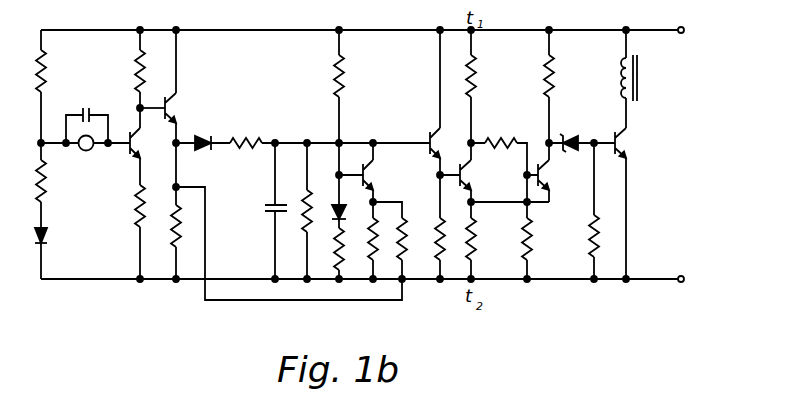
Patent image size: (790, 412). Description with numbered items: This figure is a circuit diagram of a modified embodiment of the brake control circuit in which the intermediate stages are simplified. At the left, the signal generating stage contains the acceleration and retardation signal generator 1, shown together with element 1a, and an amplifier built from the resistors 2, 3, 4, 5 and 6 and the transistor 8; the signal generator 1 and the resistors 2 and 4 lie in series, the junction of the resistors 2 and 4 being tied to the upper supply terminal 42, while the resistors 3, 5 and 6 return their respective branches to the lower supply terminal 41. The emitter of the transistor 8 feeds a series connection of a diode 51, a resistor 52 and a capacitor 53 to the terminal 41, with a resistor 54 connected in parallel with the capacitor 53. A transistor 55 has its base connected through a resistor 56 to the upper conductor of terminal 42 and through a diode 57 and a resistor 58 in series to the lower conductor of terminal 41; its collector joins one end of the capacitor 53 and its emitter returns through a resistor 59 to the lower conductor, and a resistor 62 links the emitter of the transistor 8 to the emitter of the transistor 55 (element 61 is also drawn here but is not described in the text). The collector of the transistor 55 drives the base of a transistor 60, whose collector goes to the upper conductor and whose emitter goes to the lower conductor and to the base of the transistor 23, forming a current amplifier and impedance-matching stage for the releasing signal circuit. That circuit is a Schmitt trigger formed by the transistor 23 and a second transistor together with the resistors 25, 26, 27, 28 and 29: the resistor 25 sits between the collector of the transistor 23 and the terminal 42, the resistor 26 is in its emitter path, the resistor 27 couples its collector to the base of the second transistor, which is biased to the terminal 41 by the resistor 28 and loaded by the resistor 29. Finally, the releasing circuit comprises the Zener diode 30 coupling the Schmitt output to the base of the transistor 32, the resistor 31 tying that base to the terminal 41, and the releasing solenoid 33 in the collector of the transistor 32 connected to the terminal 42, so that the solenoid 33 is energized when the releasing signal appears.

The signal generator 1 is at (86, 151).
The capacitor 1a is at (81, 112).
The resistor 2 is at (37, 92).
The resistor 3 is at (37, 186).
The resistor 4 is at (136, 78).
The resistor 5 is at (136, 207).
The resistor 6 is at (172, 232).
The transistor 8 is at (166, 126).
The transistor 23 is at (470, 173).
The resistor 25 is at (478, 80).
The resistor 26 is at (477, 236).
The resistor 27 is at (502, 138).
The resistor 28 is at (535, 236).
The resistor 29 is at (556, 80).
The Zener diode 30 is at (573, 137).
The resistor 31 is at (597, 222).
The transistor 32 is at (631, 160).
The releasing solenoid 33 is at (641, 82).
The terminal 41 is at (699, 282).
The terminal 42 is at (699, 33).
The diode 51 is at (206, 132).
The resistor 52 is at (255, 131).
The capacitor 53 is at (272, 221).
The resistor 54 is at (322, 192).
The transistor 55 is at (375, 178).
The resistor 56 is at (350, 80).
The diode 57 is at (346, 212).
The resistor 58 is at (344, 246).
The resistor 59 is at (378, 246).
The transistor 60 is at (425, 133).
The resistor 61 is at (448, 238).
The resistor 62 is at (411, 245).